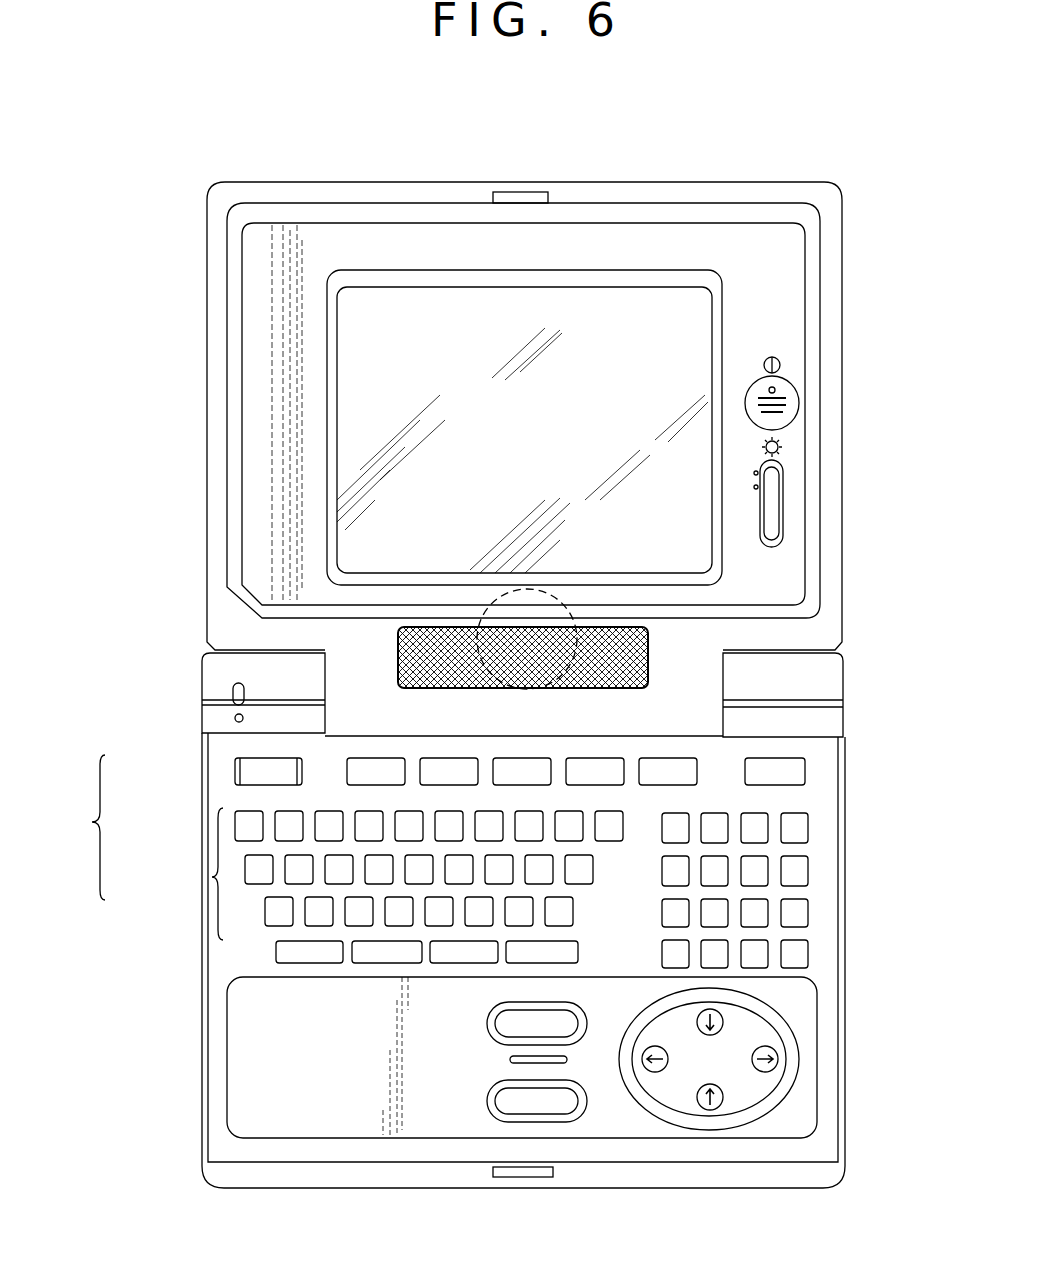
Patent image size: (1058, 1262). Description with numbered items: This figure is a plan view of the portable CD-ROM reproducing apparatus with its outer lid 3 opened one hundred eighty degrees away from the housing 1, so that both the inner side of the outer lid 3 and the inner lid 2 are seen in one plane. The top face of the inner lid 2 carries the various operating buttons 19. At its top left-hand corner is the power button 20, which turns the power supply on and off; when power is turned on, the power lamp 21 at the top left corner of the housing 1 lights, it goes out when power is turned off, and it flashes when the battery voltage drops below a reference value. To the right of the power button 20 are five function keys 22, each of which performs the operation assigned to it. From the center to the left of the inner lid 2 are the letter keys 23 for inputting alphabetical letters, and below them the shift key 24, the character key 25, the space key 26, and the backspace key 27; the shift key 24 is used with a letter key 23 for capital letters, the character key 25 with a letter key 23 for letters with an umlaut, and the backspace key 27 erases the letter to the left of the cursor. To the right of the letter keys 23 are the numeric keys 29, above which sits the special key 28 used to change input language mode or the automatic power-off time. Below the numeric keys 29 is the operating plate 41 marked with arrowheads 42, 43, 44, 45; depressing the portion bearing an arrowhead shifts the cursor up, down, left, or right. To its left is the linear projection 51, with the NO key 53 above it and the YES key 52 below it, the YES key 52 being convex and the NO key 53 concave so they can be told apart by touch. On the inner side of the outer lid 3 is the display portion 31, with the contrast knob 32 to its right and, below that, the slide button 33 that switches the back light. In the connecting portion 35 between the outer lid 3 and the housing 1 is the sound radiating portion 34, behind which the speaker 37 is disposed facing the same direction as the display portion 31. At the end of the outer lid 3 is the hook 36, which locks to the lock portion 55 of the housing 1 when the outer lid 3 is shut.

The housing 1 is at (262, 1180).
The inner lid 2 is at (225, 958).
The outer lid 3 is at (781, 192).
The operating buttons 19 is at (339, 847).
The power button 20 is at (235, 772).
The power lamp 21 is at (232, 688).
The function keys 22 is at (690, 752).
The letter keys 23 is at (212, 876).
The shift key 24 is at (308, 964).
The character key 25 is at (383, 964).
The space key 26 is at (468, 964).
The backspace key 27 is at (578, 955).
The special key 28 is at (805, 772).
The numeric keys 29 is at (877, 807).
The display portion 31 is at (700, 310).
The knob 32 is at (800, 407).
The slide button 33 is at (777, 503).
The sound radiating portion 34 is at (428, 635).
The connecting portion 35 is at (690, 670).
The hook 36 is at (513, 194).
The speaker 37 is at (565, 607).
The operating plate 41 is at (757, 1108).
The arrowhead 42 is at (724, 1020).
The arrowhead 43 is at (718, 1108).
The arrowhead 44 is at (660, 1070).
The arrowhead 45 is at (779, 1060).
The linear projection 51 is at (510, 1059).
The YES key 52 is at (490, 1100).
The NO key 53 is at (570, 1024).
The lock portion 55 is at (535, 1178).